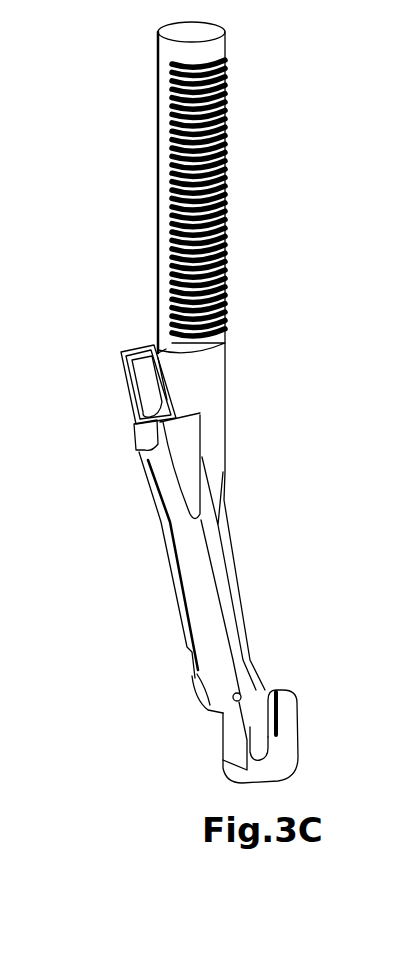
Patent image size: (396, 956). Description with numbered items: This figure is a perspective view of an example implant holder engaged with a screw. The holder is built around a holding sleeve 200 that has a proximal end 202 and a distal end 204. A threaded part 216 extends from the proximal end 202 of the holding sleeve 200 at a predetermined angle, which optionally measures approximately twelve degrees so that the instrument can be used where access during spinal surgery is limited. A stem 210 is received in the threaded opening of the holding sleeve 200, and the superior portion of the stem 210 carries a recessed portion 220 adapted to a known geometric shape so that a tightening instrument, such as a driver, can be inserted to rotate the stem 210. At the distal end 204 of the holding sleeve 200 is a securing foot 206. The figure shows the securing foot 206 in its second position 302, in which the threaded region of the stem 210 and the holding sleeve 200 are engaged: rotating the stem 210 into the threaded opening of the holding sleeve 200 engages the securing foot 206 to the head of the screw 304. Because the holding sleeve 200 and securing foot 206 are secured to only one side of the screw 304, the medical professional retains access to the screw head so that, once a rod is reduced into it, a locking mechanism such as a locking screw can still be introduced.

The holding sleeve 200 is at (212, 381).
The threaded part 216 is at (150, 152).
The stem 210 is at (113, 388).
The recessed portion 220 is at (131, 336).
The second position 302 is at (129, 428).
The proximal end 202 is at (137, 460).
The securing foot 206 is at (214, 720).
The distal end 204 is at (214, 735).
The screw 304 is at (306, 774).